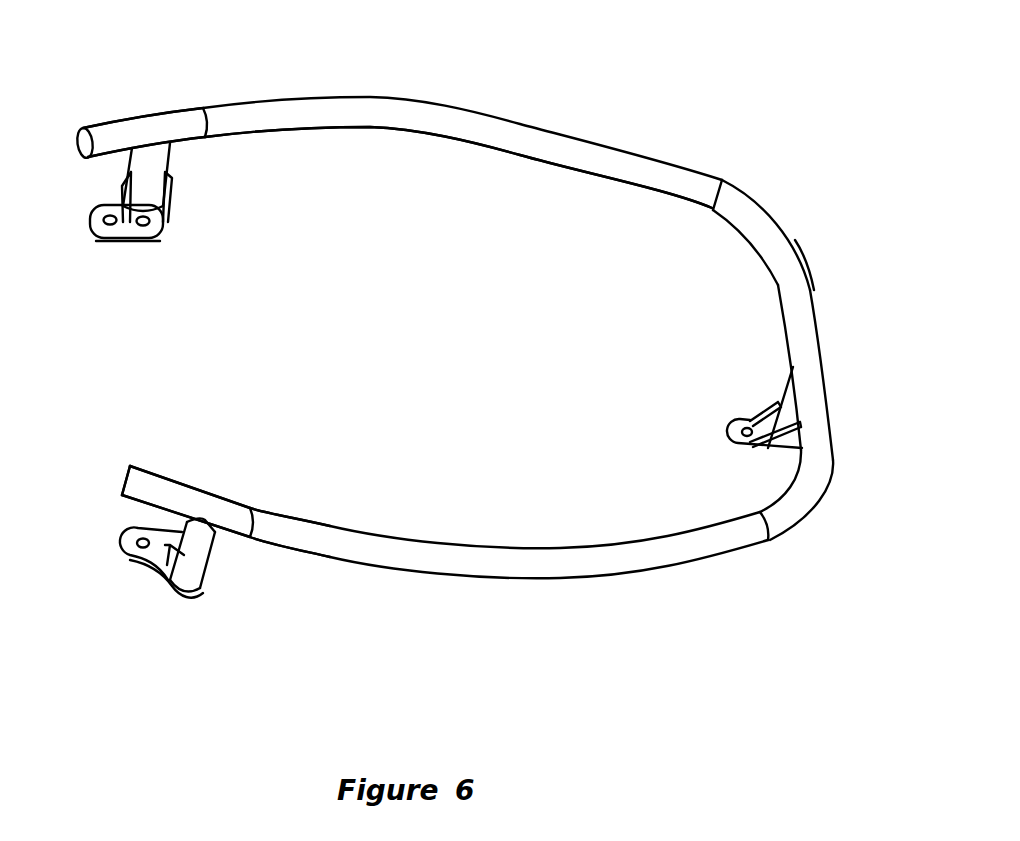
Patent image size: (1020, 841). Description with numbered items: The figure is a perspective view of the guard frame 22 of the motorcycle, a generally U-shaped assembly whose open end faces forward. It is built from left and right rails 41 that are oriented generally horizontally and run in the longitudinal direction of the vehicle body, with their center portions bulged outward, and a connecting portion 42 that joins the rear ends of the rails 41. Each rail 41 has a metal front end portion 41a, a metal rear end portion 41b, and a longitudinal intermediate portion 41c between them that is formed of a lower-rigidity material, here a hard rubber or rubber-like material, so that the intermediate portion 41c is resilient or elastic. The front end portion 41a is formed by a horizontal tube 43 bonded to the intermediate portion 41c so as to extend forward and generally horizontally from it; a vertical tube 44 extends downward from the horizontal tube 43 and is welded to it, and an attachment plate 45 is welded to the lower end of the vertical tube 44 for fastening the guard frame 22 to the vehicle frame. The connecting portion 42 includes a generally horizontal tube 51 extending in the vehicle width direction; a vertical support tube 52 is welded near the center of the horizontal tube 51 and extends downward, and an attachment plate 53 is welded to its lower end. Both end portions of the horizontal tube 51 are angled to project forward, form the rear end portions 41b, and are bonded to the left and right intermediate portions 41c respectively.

The guard frame 22 is at (468, 357).
The rail 41 is at (372, 97).
The front end portion 41a is at (150, 128).
The rear end portion 41b is at (760, 205).
The intermediate portion 41c is at (427, 117).
The connecting portion 42 is at (831, 345).
The horizontal tube 43 is at (118, 132).
The vertical tube 44 is at (152, 162).
The attachment plate 45 is at (96, 230).
The horizontal tube 51 is at (797, 288).
The vertical support tube 52 is at (780, 403).
The attachment plate 53 is at (740, 438).